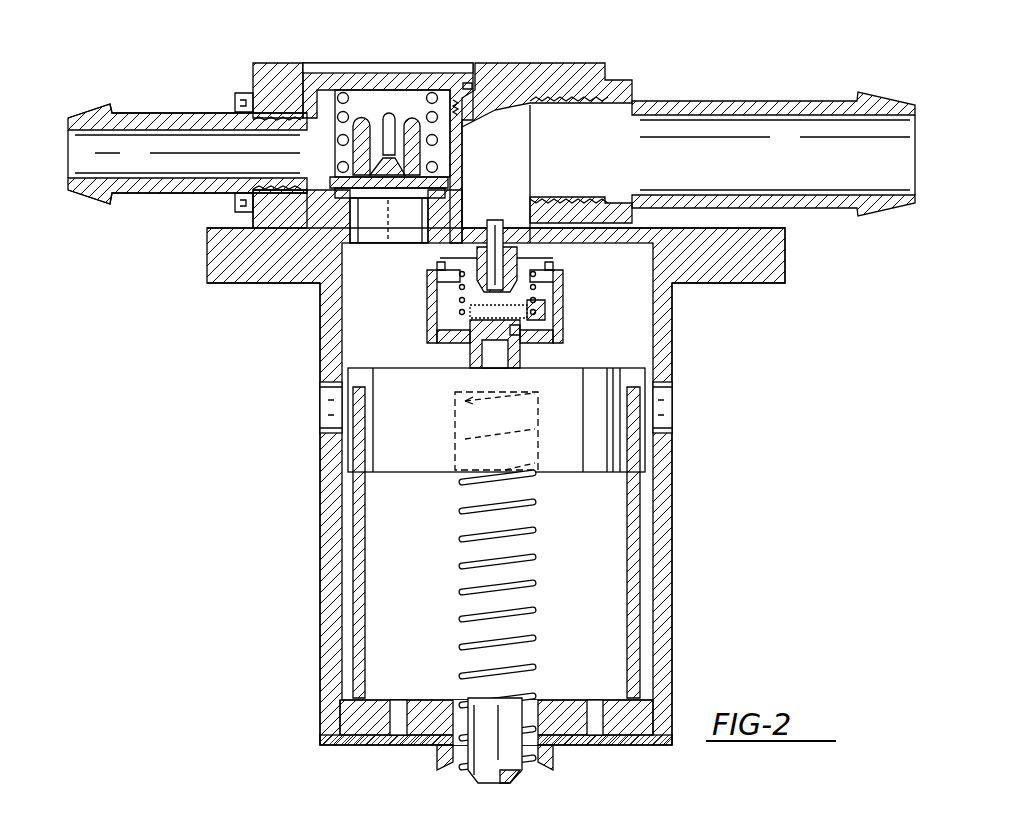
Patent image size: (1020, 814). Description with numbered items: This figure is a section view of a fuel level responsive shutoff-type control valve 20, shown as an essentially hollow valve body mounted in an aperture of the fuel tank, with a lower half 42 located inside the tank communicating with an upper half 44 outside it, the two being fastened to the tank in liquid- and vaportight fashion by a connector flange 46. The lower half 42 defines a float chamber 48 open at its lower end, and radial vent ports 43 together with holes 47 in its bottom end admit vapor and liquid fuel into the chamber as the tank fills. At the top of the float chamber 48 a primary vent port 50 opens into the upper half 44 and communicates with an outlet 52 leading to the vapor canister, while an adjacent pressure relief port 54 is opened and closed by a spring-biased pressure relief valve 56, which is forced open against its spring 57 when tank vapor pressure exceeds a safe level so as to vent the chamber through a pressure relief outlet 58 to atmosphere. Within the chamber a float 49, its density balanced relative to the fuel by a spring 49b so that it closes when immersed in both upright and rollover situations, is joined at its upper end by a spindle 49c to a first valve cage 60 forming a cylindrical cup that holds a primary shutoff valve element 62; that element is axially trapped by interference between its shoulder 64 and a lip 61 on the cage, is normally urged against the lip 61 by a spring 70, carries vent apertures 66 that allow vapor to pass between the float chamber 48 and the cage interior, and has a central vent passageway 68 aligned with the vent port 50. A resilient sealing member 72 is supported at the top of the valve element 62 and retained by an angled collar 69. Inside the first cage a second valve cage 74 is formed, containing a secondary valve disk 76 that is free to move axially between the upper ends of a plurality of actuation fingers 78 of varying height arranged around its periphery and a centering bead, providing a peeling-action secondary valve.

The valve 20 is at (282, 375).
The lower half 42 is at (320, 333).
The radial vent ports 43 is at (327, 412).
The upper half 44 is at (583, 78).
The connector flange 46 is at (784, 253).
The holes 47 is at (397, 727).
The float chamber 48 is at (648, 340).
The float 49 is at (607, 447).
The spring 49b is at (535, 637).
The spindle 49c is at (540, 368).
The primary vent port 50 is at (468, 232).
The outlet 52 is at (808, 120).
The pressure relief port 54 is at (357, 228).
The pressure relief valve 56 is at (372, 107).
The spring 57 is at (433, 92).
The pressure relief outlet 58 is at (170, 137).
The first valve cage 60 is at (430, 318).
The lip 61 is at (440, 272).
The primary shutoff valve element 62 is at (432, 264).
The shoulder 64 is at (432, 292).
The vent apertures 66 is at (540, 258).
The central vent passageway 68 is at (497, 226).
The angled collar 69 is at (478, 228).
The spring 70 is at (452, 335).
The sealing member 72 is at (525, 240).
The second valve cage 74 is at (560, 318).
The secondary valve disk 76 is at (562, 343).
The actuation fingers 78 is at (560, 301).